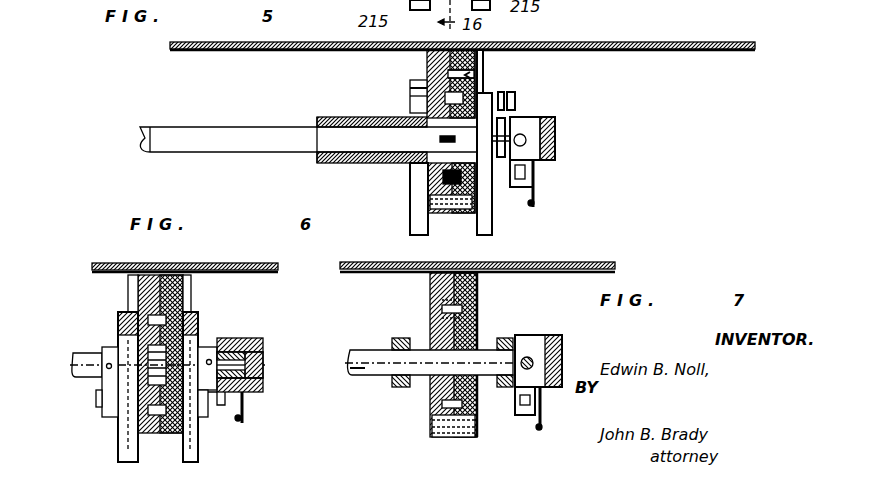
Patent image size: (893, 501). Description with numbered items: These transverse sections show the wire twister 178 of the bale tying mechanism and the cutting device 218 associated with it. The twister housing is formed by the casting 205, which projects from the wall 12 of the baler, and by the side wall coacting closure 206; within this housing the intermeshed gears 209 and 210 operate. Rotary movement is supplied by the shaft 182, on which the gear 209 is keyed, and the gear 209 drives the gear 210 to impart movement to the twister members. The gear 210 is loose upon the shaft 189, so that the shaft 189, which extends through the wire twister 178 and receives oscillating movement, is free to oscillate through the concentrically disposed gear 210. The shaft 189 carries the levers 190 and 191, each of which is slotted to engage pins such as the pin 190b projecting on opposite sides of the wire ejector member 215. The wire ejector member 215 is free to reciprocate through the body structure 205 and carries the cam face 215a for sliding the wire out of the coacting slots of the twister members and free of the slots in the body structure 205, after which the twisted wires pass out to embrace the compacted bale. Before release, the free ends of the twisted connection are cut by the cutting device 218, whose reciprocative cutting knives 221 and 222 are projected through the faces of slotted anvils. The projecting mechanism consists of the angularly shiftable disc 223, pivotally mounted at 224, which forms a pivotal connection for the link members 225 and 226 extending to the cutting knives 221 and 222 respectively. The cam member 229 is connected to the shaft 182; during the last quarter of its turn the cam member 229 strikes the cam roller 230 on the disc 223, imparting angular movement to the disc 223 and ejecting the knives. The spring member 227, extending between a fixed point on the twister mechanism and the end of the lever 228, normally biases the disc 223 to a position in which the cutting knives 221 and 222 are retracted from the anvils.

In FIG. 5, the wall 12 is at (662, 50).
In FIG. 6, the wall 12 is at (262, 274).
In FIG. 7, the wall 12 is at (590, 258).
In FIG. 5, the wire twister 178 is at (440, 190).
In FIG. 5, the shaft 182 is at (178, 157).
In FIG. 6, the shaft 189 is at (85, 356).
In FIG. 7, the shaft 189 is at (358, 378).
In FIG. 5, the lever 190 is at (380, 172).
In FIG. 6, the lever 190 is at (110, 420).
In FIG. 7, the lever 190 is at (398, 390).
In FIG. 6, the pin 190b is at (98, 395).
In FIG. 5, the lever 191 is at (536, 180).
In FIG. 6, the lever 191 is at (214, 418).
In FIG. 7, the lever 191 is at (503, 396).
In FIG. 5, the casting 205 is at (418, 62).
In FIG. 6, the casting 205 is at (136, 292).
In FIG. 7, the casting 205 is at (440, 284).
In FIG. 5, the side wall coacting closure 206 is at (484, 56).
In FIG. 6, the side wall coacting closure 206 is at (188, 286).
In FIG. 7, the side wall coacting closure 206 is at (480, 320).
In FIG. 5, the gear 209 is at (410, 108).
In FIG. 7, the gear 210 is at (435, 418).
In FIG. 5, the wire ejector member 215 is at (412, 225).
In FIG. 6, the wire ejector member 215 is at (138, 452).
In FIG. 5, the cam face 215a is at (410, 86).
In FIG. 6, the cam face 215a is at (120, 316).
In FIG. 5, the cutting device 218 is at (556, 137).
In FIG. 7, the cutting device 218 is at (535, 343).
In FIG. 5, the cutting knife 221 is at (556, 152).
In FIG. 7, the cutting knife 222 is at (532, 360).
In FIG. 6, the disc 223 is at (260, 340).
In FIG. 6, the pivotal mounting 224 is at (265, 368).
In FIG. 7, the link member 225 is at (416, 343).
In FIG. 6, the link member 226 is at (262, 390).
In FIG. 5, the spring member 227 is at (540, 210).
In FIG. 6, the spring member 227 is at (248, 420).
In FIG. 7, the spring member 227 is at (538, 430).
In FIG. 5, the lever 228 is at (537, 197).
In FIG. 6, the lever 228 is at (246, 405).
In FIG. 7, the lever 228 is at (542, 412).
In FIG. 5, the cam member 229 is at (507, 122).
In FIG. 5, the cam roller 230 is at (518, 104).